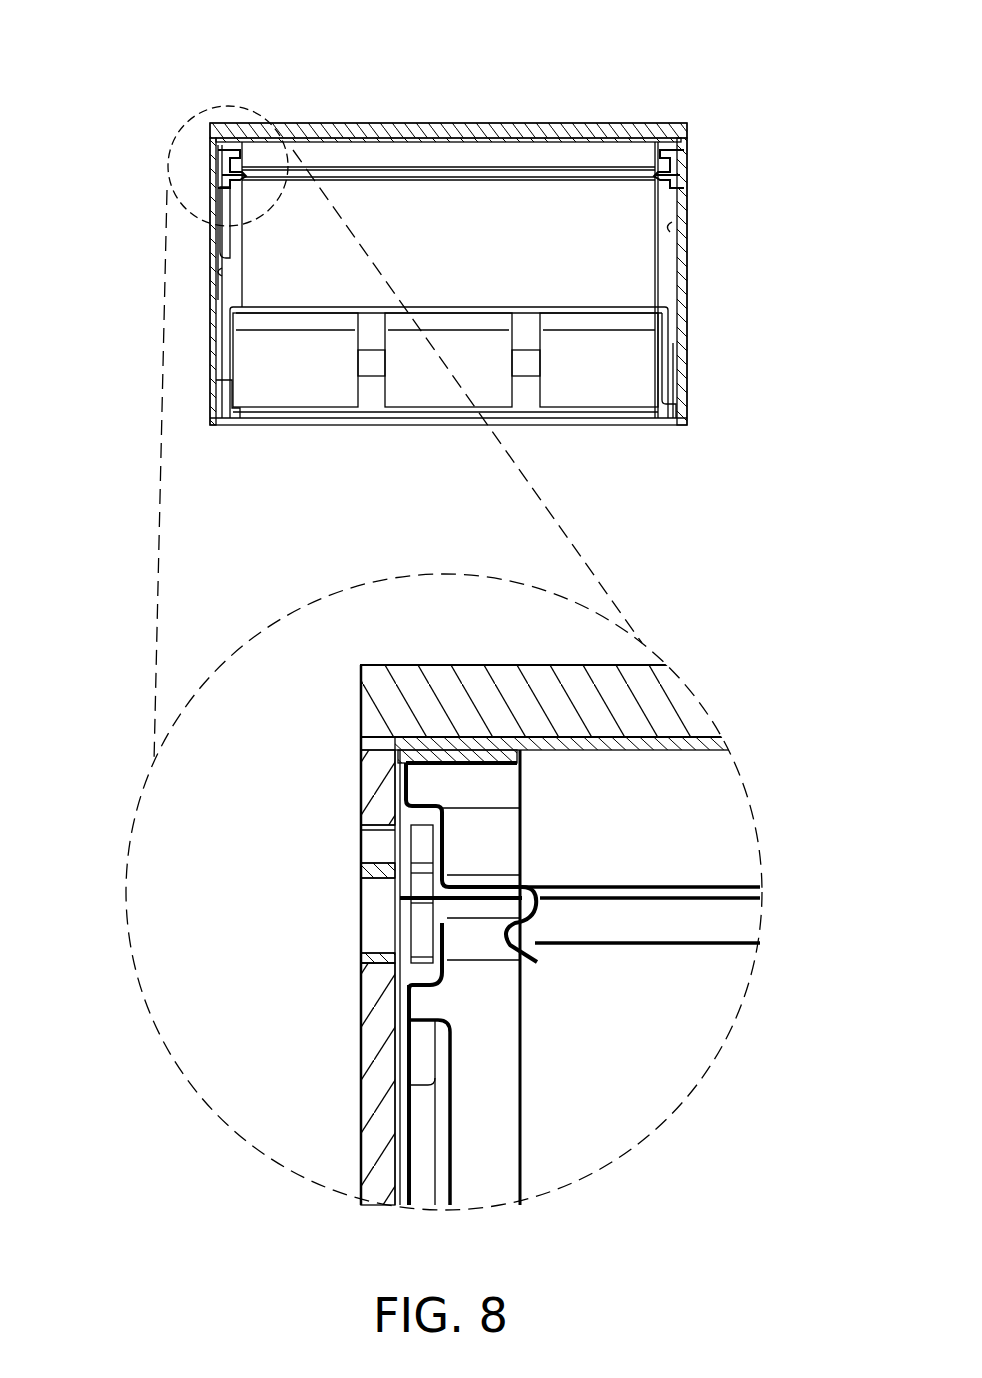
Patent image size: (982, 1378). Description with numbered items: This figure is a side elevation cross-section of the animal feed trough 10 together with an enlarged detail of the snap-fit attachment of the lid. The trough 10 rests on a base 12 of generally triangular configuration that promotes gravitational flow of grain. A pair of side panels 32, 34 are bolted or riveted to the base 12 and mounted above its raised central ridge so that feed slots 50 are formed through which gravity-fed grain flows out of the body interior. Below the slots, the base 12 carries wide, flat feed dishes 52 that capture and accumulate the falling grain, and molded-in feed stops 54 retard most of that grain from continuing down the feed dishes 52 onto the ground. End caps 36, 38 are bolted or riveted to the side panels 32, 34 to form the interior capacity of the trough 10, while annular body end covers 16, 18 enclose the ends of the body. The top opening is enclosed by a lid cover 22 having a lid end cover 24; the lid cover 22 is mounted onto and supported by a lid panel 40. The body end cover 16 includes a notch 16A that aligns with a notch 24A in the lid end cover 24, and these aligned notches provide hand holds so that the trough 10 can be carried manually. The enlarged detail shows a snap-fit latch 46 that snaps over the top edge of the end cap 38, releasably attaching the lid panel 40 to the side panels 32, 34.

The animal feed trough 10 is at (420, 76).
The base 12 is at (212, 405).
The body end cover 16 is at (210, 293).
The notch 16A is at (385, 960).
The body end cover 18 is at (688, 283).
The lid cover 22 is at (318, 140).
The lid end cover 24 is at (372, 775).
The notch 24A is at (380, 838).
The side panel 32 is at (660, 1070).
The side panel 34 is at (540, 235).
The end cap 36 is at (215, 270).
The end cap 38 is at (688, 222).
The lid panel 40 is at (505, 147).
The snap-fit latch 46 is at (215, 160).
The feed slot 50 is at (612, 310).
The feed dish 52 is at (335, 385).
The feed stop 54 is at (305, 412).